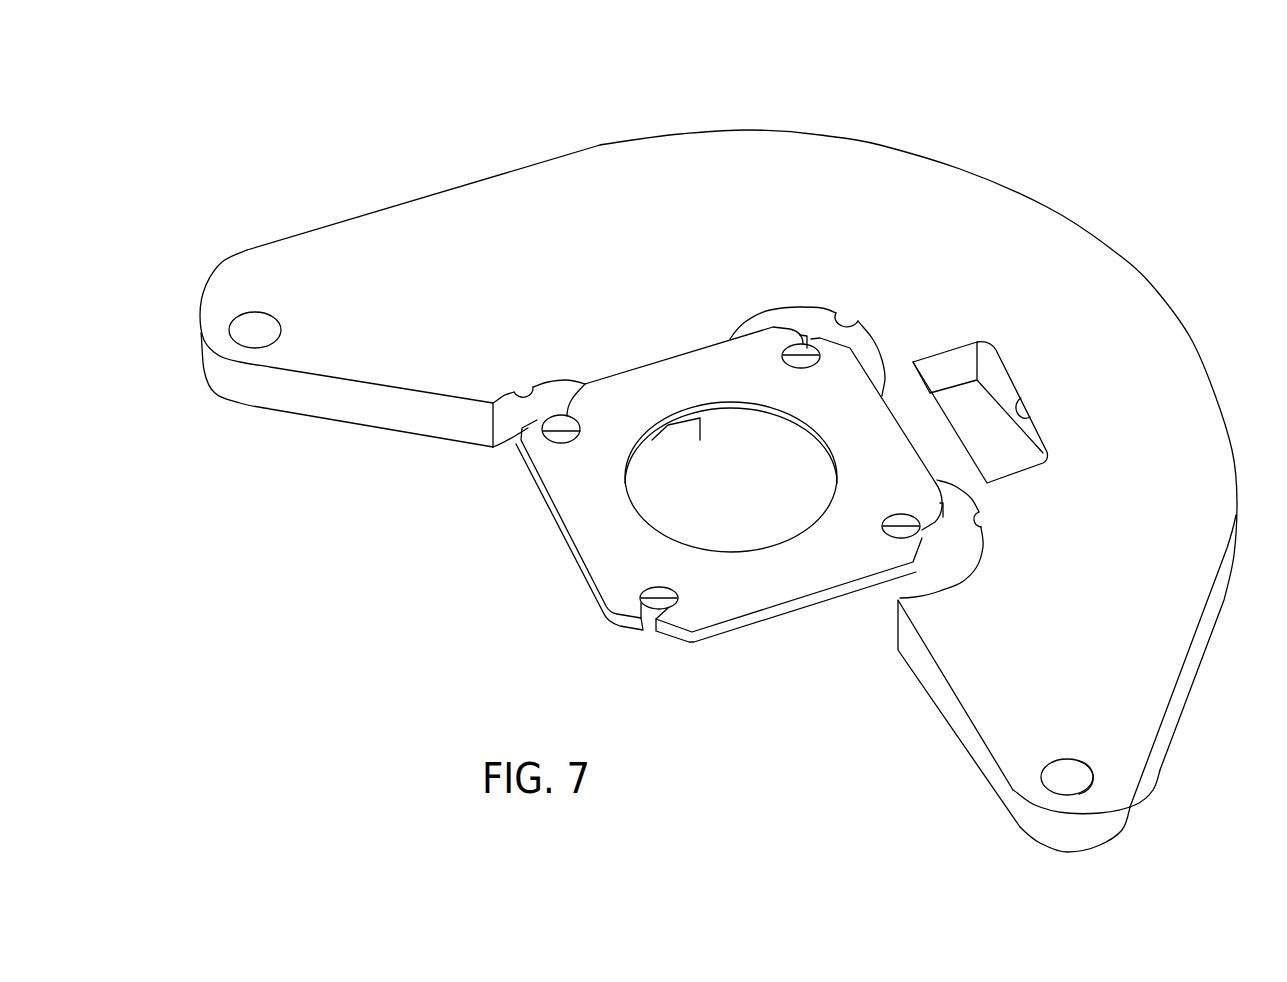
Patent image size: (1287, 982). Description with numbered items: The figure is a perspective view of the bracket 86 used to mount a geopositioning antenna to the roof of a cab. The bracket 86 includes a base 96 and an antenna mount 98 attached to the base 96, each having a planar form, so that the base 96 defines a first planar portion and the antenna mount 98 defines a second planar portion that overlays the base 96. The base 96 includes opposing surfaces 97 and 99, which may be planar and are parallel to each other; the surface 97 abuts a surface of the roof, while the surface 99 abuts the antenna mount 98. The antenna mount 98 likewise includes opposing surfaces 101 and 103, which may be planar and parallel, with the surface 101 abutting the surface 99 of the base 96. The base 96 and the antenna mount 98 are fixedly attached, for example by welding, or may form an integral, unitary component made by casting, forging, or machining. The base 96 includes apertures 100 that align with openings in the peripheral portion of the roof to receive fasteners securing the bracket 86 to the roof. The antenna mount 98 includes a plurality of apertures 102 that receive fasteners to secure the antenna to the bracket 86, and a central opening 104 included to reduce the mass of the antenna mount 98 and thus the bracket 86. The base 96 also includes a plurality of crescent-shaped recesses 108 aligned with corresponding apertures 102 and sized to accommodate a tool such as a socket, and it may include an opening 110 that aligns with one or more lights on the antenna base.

The bracket 86 is at (1076, 100).
The base 96 is at (387, 208).
The surface 97 is at (317, 417).
The antenna mount 98 is at (765, 617).
The surface 99 is at (715, 192).
The apertures 100 is at (255, 348).
The surface 101 is at (572, 552).
The apertures 102 is at (790, 342).
The surface 103 is at (585, 497).
The central opening 104 is at (731, 477).
The crescent-shaped recesses 108 is at (860, 326).
The opening 110 is at (1023, 400).